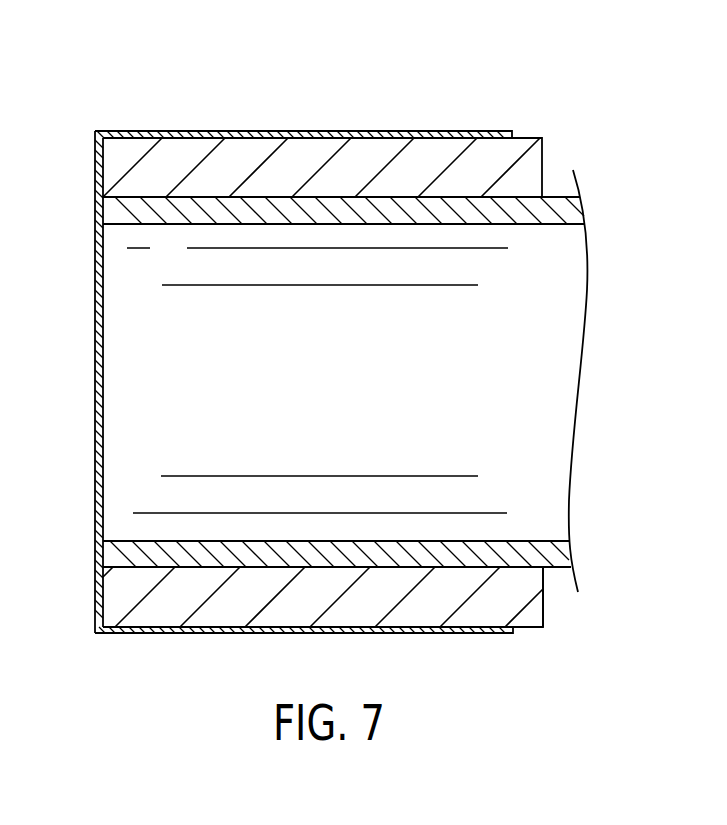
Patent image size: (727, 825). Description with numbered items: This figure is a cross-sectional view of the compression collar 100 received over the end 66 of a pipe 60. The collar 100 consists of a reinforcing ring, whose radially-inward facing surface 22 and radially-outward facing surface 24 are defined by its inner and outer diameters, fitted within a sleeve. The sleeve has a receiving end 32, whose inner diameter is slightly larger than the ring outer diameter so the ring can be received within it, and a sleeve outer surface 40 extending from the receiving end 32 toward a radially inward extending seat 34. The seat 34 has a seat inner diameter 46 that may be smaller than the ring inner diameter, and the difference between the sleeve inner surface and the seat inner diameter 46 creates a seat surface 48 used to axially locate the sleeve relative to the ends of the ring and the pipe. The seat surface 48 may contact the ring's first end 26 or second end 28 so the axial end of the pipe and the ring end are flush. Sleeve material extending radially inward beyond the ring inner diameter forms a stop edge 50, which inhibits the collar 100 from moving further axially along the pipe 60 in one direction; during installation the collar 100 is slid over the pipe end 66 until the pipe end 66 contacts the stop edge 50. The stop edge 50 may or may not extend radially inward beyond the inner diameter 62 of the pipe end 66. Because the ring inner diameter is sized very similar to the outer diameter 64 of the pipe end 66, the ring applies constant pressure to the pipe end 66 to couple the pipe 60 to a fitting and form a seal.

The compression collar 100 is at (596, 54).
The radially-inward facing surface 22 is at (445, 225).
The radially-outward facing surface 24 is at (387, 131).
The first end 26 is at (543, 609).
The second end 28 is at (100, 596).
The receiving end 32 is at (513, 135).
The seat 34 is at (88, 177).
The sleeve outer surface 40 is at (297, 131).
The seat inner diameter 46 is at (97, 506).
The seat surface 48 is at (100, 158).
The stop edge 50 is at (118, 220).
The pipe 60 is at (527, 527).
The inner diameter 62 is at (315, 225).
The outer diameter 64 is at (192, 567).
The pipe end 66 is at (100, 552).